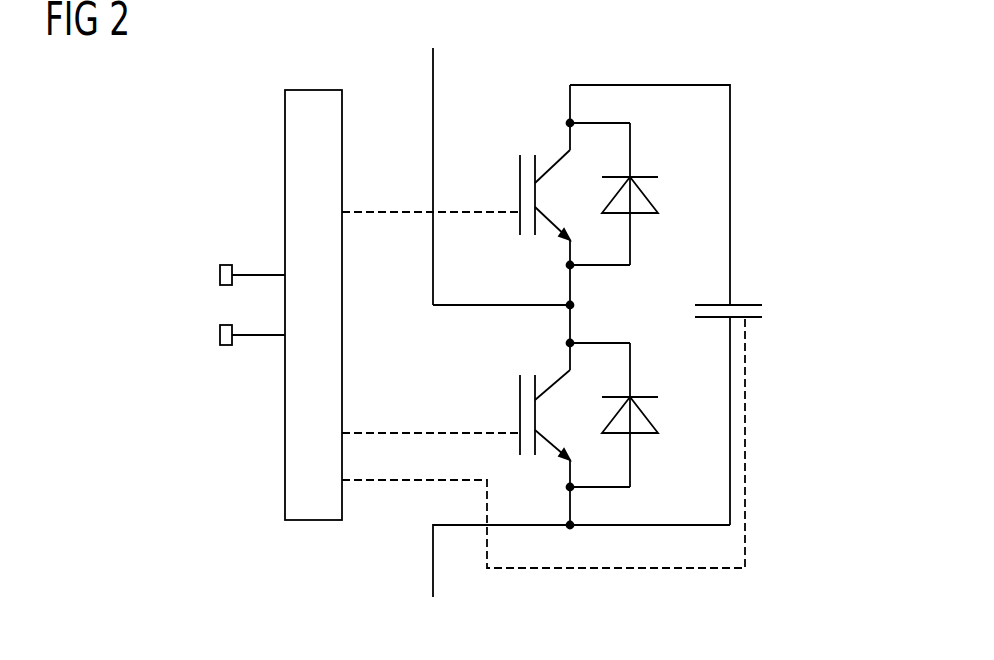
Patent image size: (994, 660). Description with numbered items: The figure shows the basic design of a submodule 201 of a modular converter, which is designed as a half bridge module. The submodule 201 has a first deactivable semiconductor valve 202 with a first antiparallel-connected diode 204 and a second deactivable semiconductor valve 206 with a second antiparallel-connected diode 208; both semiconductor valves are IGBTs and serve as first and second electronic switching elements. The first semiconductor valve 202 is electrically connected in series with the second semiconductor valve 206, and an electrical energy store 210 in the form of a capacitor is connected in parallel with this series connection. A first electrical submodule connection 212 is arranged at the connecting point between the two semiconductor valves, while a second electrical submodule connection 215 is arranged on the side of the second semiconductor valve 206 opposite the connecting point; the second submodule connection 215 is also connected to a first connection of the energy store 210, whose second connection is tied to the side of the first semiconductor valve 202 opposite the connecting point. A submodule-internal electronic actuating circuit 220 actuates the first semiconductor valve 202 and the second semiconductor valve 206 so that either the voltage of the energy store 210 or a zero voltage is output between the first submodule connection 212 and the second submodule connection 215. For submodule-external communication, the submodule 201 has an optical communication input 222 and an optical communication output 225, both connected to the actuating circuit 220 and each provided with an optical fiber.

The submodule 201 is at (775, 58).
The first deactivable semiconductor valve 202 is at (518, 177).
The first antiparallel-connected diode 204 is at (647, 193).
The second deactivable semiconductor valve 206 is at (518, 398).
The second antiparallel-connected diode 208 is at (647, 413).
The electrical energy store 210 is at (750, 303).
The first electrical submodule connection 212 is at (433, 72).
The second electrical submodule connection 215 is at (433, 582).
The electronic actuating circuit 220 is at (311, 90).
The optical communication input 222 is at (219, 275).
The optical communication output 225 is at (219, 335).